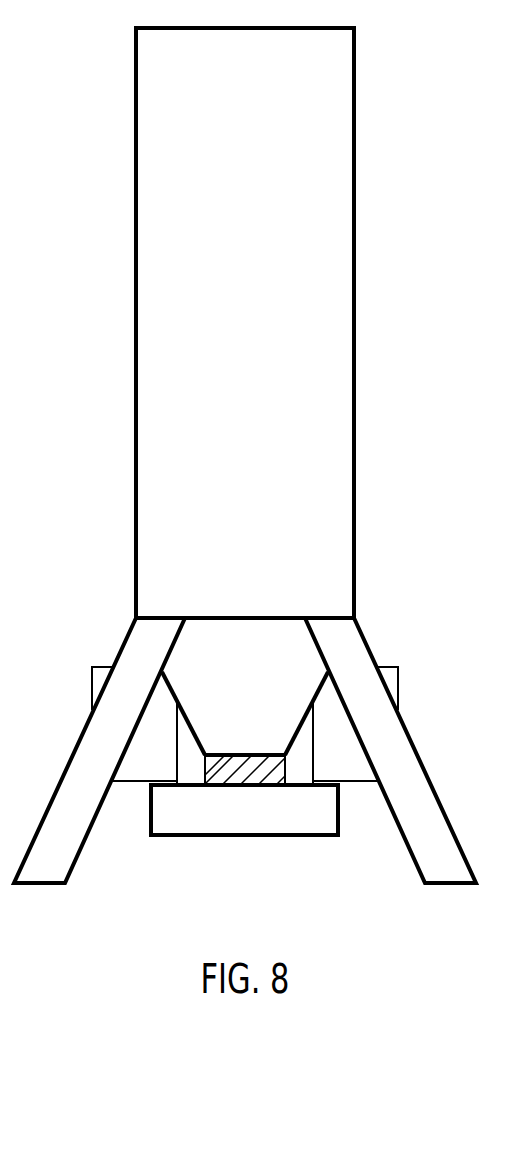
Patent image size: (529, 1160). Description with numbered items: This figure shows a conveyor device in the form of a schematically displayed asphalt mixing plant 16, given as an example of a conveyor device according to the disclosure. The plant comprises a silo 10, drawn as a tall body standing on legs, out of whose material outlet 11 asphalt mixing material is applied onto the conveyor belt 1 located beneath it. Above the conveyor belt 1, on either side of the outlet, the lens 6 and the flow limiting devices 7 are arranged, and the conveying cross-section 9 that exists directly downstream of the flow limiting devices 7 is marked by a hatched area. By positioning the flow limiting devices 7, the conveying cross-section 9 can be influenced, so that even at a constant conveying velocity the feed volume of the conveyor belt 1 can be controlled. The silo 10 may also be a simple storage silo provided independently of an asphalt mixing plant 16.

The asphalt mixing plant 16 is at (104, 68).
The silo 10 is at (337, 264).
The material outlet 11 is at (297, 657).
The lens 6 is at (133, 770).
The flow limiting devices 7 is at (190, 770).
The conveying cross-section 9 is at (263, 775).
The conveyor belt 1 is at (225, 820).